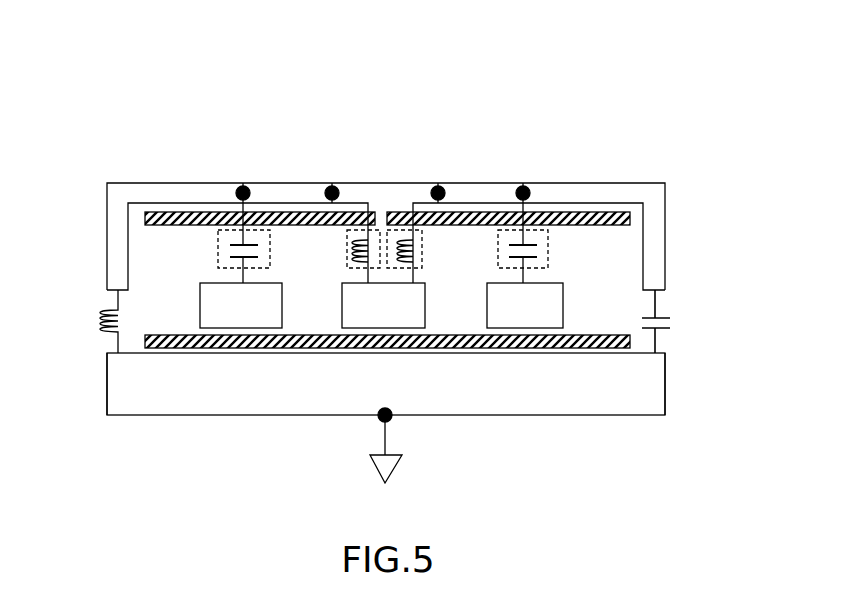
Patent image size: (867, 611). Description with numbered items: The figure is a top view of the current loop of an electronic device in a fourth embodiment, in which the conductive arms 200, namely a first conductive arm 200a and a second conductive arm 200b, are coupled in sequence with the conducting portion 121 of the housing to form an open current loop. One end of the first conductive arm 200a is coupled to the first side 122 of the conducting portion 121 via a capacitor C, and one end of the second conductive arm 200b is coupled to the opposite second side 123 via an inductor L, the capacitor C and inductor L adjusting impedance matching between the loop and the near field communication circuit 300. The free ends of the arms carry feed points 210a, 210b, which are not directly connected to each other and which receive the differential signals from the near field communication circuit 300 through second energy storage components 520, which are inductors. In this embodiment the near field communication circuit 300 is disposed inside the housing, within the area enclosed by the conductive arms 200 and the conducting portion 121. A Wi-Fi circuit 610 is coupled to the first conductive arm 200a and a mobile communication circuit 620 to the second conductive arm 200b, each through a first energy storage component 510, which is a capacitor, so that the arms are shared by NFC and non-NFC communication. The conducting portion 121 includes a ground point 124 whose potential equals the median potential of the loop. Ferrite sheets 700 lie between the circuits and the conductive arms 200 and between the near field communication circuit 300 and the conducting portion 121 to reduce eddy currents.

The conductive arm 200 is at (297, 62).
The first conductive arm 200a is at (640, 183).
The second conductive arm 200b is at (272, 183).
The feed point 210a is at (439, 192).
The feed point 210b is at (333, 192).
The Ferrite sheet 700 is at (386, 212).
The first energy storage component 510 is at (215, 253).
The second energy storage component 520 is at (345, 266).
The mobile communication circuit 620 is at (241, 305).
The near field communication circuit 300 is at (383, 305).
The Wi-Fi circuit 610 is at (525, 305).
The inductor L is at (93, 321).
The capacitor C is at (671, 321).
The conducting portion 121 is at (270, 415).
The first side 122 is at (665, 382).
The second side 123 is at (107, 383).
The ground point 124 is at (393, 420).